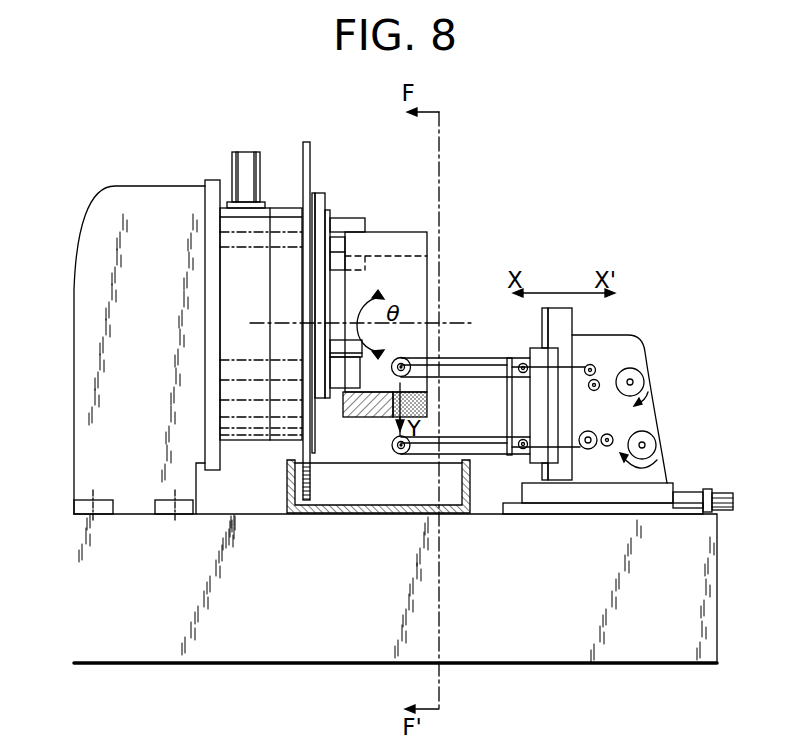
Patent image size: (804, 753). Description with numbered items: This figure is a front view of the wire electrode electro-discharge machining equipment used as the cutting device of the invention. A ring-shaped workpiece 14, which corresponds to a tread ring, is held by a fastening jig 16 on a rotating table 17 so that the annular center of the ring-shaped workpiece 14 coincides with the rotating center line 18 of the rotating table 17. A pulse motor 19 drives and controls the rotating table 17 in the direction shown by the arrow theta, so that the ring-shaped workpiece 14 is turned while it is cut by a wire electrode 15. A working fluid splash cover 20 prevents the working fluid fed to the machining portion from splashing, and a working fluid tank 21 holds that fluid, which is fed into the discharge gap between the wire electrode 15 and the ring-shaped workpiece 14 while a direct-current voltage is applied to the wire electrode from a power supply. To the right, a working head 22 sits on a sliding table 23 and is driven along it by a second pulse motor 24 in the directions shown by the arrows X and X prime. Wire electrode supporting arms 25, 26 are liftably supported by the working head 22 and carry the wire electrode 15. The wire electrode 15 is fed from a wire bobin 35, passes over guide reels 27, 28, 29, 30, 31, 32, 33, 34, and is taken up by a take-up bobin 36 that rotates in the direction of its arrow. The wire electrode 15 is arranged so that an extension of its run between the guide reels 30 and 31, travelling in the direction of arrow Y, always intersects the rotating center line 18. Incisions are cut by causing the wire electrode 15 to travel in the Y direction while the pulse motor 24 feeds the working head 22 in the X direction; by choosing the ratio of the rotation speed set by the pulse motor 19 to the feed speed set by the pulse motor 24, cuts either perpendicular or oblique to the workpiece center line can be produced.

The ring-shaped workpiece 14 is at (392, 232).
The wire electrode 15 is at (392, 427).
The fastening jig 16 is at (345, 218).
The rotating table 17 is at (316, 193).
The rotating center line 18 is at (452, 324).
The pulse motor 19 is at (243, 152).
The working fluid splash cover 20 is at (307, 142).
The working fluid tank 21 is at (356, 496).
The working head 22 is at (661, 339).
The sliding table 23 is at (695, 491).
The pulse motor 24 is at (736, 499).
The wire electrode supporting arm 25 is at (488, 357).
The wire electrode supporting arm 26 is at (476, 460).
The guide reel 27 is at (599, 382).
The guide reel 28 is at (590, 364).
The guide reel 29 is at (513, 381).
The guide reel 30 is at (411, 363).
The guide reel 31 is at (399, 456).
The guide reel 32 is at (522, 438).
The guide reel 33 is at (588, 449).
The guide reel 34 is at (607, 447).
The wire bobin 35 is at (645, 378).
The take-up bobin 36 is at (648, 440).